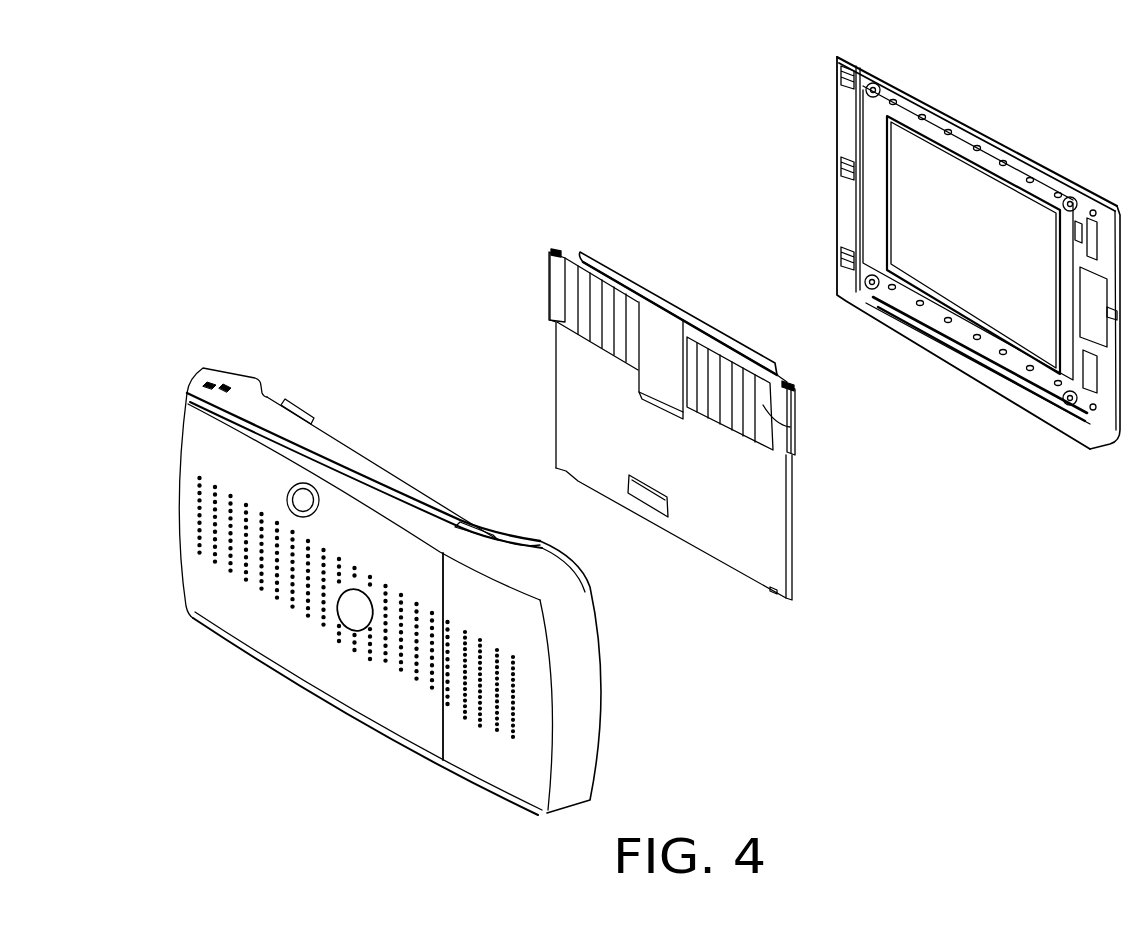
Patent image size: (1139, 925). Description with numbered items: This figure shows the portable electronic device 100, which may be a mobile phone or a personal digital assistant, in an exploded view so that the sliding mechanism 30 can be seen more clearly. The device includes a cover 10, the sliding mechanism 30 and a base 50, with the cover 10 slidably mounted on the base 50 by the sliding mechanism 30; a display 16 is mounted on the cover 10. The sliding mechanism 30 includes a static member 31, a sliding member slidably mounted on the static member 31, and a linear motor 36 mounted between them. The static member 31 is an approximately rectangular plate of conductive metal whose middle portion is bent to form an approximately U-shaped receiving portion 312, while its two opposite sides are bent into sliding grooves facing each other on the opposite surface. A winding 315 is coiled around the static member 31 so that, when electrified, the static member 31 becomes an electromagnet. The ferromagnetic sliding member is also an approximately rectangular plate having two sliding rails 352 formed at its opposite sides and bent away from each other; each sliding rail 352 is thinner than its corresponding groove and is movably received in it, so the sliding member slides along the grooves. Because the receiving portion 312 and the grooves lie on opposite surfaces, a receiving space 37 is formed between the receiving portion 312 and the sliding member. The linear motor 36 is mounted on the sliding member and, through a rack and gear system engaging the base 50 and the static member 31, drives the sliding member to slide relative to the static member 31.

The portable electronic device 100 is at (667, 38).
The cover 10 is at (978, 248).
The display 16 is at (1007, 203).
The sliding mechanism 30 is at (512, 213).
The static member 31 is at (660, 352).
The receiving portion 312 is at (658, 337).
The receiving space 37 is at (683, 325).
The winding 315 is at (790, 428).
The sliding rails 352 is at (788, 507).
The linear motor 36 is at (650, 500).
The base 50 is at (342, 521).